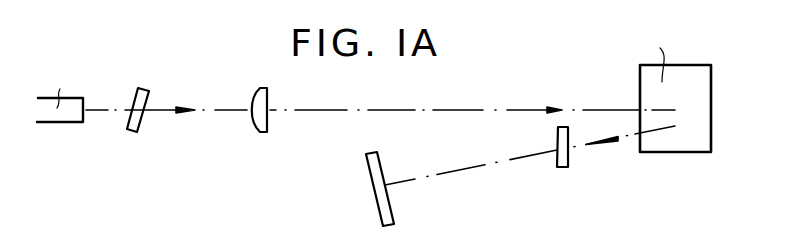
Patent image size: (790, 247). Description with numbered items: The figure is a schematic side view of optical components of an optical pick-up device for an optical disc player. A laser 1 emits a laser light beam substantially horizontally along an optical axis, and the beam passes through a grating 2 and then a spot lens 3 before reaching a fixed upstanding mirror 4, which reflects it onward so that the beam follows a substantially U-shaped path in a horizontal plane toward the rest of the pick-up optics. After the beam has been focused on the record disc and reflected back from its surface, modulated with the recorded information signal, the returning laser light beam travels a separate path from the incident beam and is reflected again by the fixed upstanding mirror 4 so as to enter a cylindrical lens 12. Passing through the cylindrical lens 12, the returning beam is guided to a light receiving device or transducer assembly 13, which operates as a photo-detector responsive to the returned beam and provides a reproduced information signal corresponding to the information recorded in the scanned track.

The laser 1 is at (77, 124).
The grating 2 is at (145, 118).
The spot lens 3 is at (253, 126).
The fixed upstanding mirror 4 is at (670, 153).
The cylindrical lens 12 is at (557, 157).
The light receiving device or transducer assembly 13 is at (370, 183).